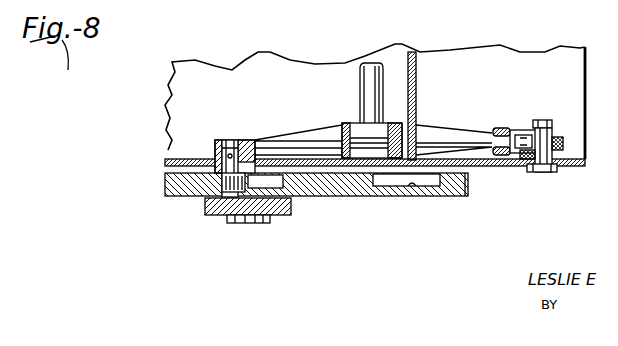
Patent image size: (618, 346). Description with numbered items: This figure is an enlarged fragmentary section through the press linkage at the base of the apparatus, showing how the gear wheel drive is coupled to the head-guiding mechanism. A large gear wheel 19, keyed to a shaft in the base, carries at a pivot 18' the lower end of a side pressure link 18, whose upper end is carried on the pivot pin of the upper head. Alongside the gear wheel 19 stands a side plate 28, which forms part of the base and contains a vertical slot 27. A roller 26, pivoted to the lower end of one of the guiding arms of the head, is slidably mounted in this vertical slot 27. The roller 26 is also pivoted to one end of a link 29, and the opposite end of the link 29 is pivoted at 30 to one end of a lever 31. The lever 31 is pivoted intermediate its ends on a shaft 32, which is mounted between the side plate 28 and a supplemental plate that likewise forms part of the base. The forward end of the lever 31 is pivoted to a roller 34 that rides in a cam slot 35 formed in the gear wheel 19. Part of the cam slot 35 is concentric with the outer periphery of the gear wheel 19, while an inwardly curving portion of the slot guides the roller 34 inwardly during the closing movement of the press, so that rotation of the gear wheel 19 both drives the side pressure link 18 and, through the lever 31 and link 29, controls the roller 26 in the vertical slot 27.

The side pressure link 18 is at (243, 227).
The pivot 18' is at (248, 236).
The gear wheel 19 is at (350, 194).
The roller 26 is at (540, 173).
The vertical slot 27 is at (525, 166).
The side plate 28 is at (492, 167).
The link 29 is at (557, 135).
The pivot 30 is at (540, 118).
The lever 31 is at (466, 132).
The shaft 32 is at (368, 90).
The roller 34 is at (259, 157).
The cam slot 35 is at (273, 186).